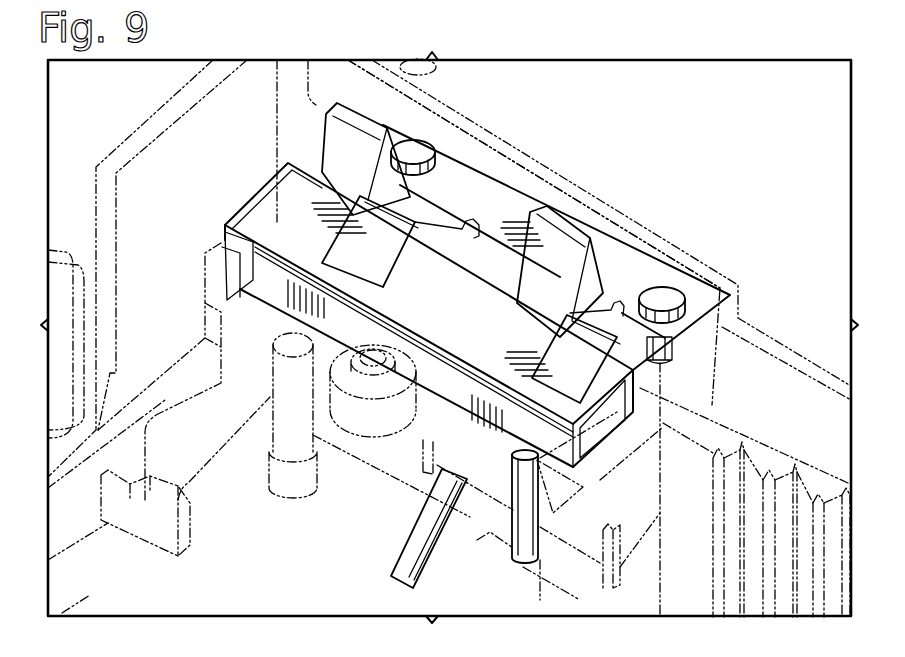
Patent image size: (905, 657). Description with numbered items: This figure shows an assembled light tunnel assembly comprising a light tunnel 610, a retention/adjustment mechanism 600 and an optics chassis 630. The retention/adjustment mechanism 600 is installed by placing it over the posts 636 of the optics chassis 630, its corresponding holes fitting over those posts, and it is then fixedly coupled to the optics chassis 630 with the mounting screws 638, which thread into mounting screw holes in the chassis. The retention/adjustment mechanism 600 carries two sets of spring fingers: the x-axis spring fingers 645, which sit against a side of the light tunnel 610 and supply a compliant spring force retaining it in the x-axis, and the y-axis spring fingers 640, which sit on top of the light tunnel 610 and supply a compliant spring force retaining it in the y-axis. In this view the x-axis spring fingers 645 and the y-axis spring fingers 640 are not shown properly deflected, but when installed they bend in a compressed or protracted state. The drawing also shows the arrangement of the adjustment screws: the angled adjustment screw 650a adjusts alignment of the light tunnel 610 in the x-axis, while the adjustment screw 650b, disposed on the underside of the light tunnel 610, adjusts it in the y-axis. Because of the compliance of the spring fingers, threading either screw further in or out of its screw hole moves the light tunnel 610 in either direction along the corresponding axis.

The retention/adjustment mechanism 600 is at (519, 263).
The light tunnel 610 is at (457, 313).
The optics chassis 630 is at (740, 303).
The posts 636 is at (503, 213).
The mounting screws 638 is at (415, 148).
The y-axis spring fingers 640 is at (385, 262).
The x-axis spring fingers 645 is at (357, 115).
The angled adjustment screw 650a is at (393, 586).
The adjustment screw 650b is at (518, 560).